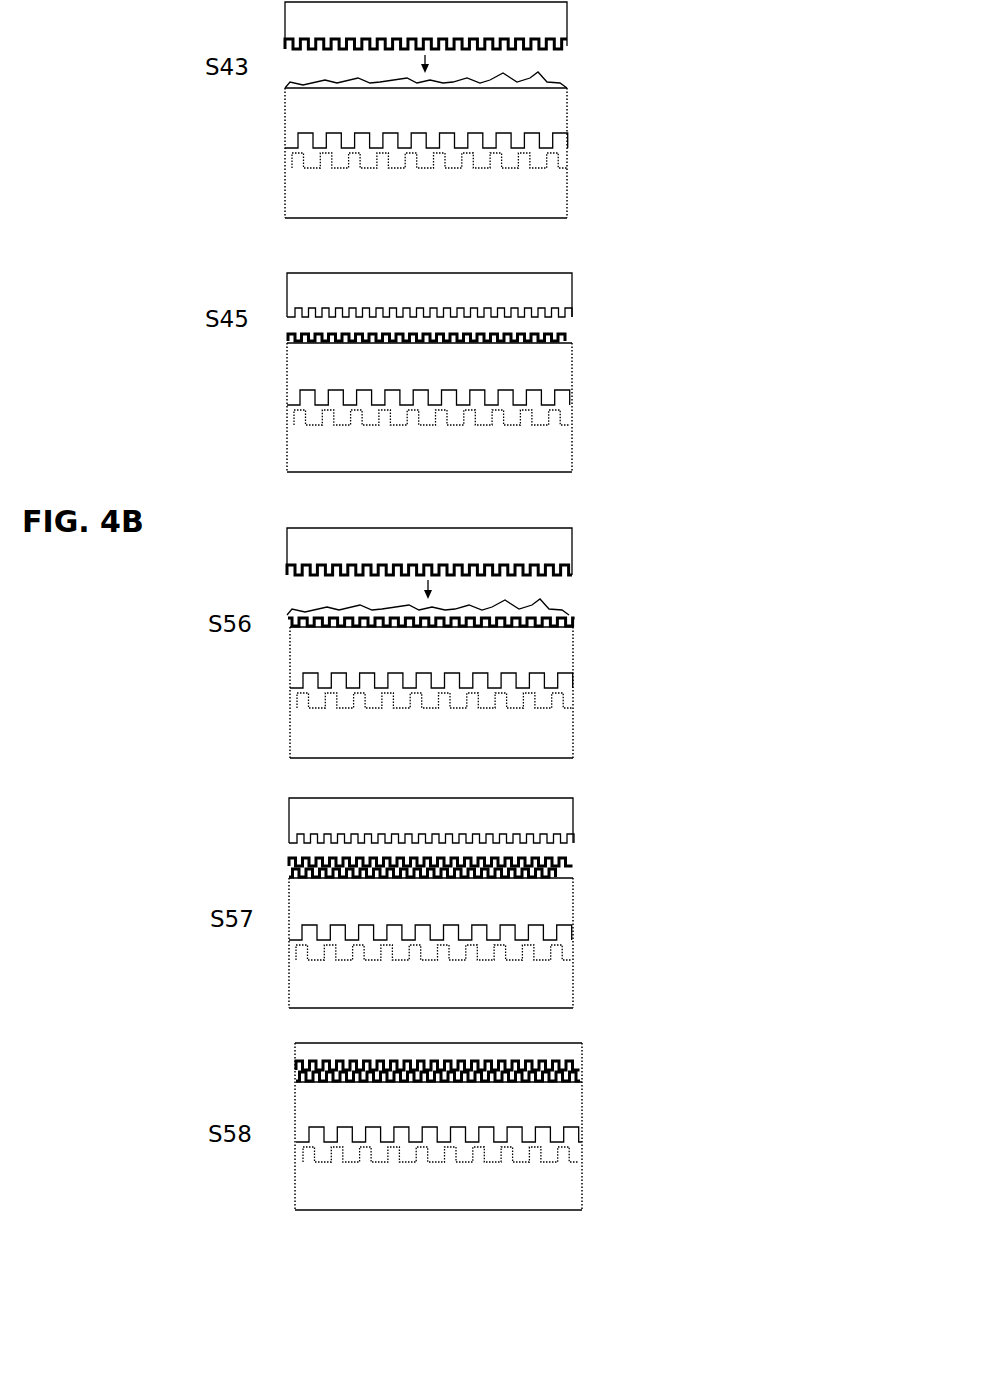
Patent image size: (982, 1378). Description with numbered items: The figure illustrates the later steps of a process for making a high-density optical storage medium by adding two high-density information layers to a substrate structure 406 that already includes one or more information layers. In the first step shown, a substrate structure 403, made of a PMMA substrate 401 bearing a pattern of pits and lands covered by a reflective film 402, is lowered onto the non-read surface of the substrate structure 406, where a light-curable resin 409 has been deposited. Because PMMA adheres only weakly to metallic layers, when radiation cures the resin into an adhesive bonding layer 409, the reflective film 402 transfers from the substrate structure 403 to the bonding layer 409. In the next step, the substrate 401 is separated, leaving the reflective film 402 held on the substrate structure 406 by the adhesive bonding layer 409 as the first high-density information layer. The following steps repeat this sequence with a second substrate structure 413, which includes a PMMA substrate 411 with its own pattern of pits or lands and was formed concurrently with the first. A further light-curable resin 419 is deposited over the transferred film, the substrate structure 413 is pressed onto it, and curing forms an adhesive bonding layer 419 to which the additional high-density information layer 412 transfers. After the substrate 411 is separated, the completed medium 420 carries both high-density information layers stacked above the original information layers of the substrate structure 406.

The substrate structure 403 is at (582, 5).
The light-curable resin / adhesive bonding layer 409 is at (543, 82).
The substrate structure 406 is at (580, 87).
The substrate 401 is at (572, 292).
The reflective film 402 is at (563, 332).
The substrate structure 413 is at (582, 573).
The light-curable resin / adhesive bonding layer 419 is at (547, 605).
The substrate 411 is at (573, 818).
The high-density information layer 412 is at (575, 859).
The high-density optical storage medium 420 is at (560, 1043).